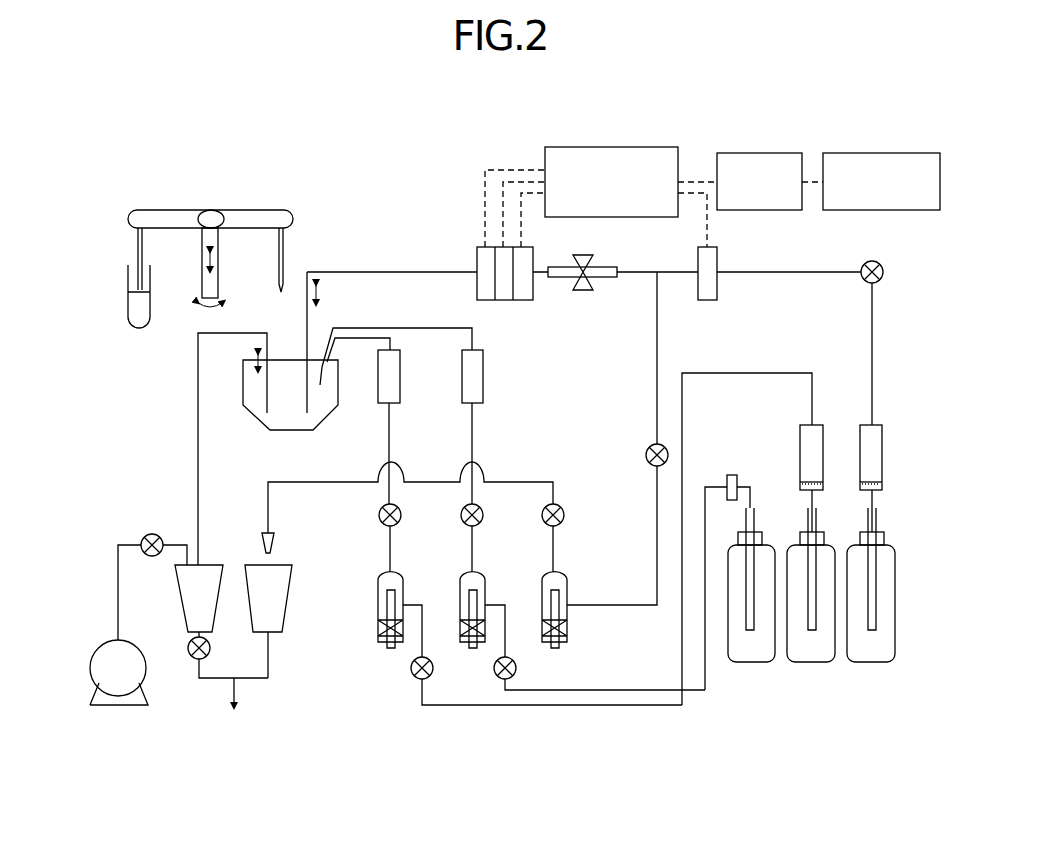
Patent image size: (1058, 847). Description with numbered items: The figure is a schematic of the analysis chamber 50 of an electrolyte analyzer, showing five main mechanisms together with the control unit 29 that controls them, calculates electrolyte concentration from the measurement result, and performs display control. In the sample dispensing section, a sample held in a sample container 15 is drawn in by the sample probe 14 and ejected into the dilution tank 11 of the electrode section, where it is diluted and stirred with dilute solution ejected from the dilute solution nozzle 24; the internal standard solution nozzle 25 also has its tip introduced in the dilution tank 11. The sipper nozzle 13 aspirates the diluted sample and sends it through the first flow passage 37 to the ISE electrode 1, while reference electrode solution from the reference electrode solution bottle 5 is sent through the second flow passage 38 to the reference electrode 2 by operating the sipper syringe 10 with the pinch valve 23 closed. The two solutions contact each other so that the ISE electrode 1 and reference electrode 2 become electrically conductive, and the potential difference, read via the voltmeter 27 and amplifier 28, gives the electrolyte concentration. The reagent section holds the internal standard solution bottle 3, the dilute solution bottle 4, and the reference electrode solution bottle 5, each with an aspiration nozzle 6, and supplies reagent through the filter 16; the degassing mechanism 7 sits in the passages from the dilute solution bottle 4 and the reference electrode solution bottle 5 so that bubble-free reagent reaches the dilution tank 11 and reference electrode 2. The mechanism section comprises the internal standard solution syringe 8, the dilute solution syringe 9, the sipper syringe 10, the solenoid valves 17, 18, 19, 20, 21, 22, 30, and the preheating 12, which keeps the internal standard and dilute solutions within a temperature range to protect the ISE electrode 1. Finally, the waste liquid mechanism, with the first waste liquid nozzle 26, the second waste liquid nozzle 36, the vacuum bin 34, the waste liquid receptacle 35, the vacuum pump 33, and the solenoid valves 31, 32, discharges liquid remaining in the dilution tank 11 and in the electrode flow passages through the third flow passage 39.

The analysis chamber 50 is at (133, 116).
The ISE electrode 1 is at (477, 262).
The reference electrode 2 is at (717, 260).
The internal standard solution bottle 3 is at (775, 545).
The dilute solution bottle 4 is at (834, 545).
The reference electrode solution bottle 5 is at (896, 592).
The aspiration nozzle 6 is at (750, 630).
The degassing mechanism 7 is at (813, 426).
The internal standard solution syringe 8 is at (391, 648).
The dilute solution syringe 9 is at (473, 648).
The sipper syringe 10 is at (555, 648).
The dilution tank 11 is at (256, 420).
The preheating 12 is at (402, 380).
The sipper nozzle 13 is at (308, 317).
The sample probe 14 is at (283, 212).
The sample container 15 is at (128, 312).
The filter 16 is at (732, 475).
The solenoid valve 17 is at (541, 518).
The solenoid valve 18 is at (460, 518).
The solenoid valve 19 is at (378, 518).
The solenoid valve 20 is at (505, 679).
The solenoid valve 21 is at (883, 270).
The solenoid valve 22 is at (646, 455).
The pinch valve 23 is at (583, 290).
The dilute solution nozzle 24 is at (320, 360).
The internal standard solution nozzle 25 is at (320, 385).
The first waste liquid nozzle 26 is at (262, 343).
The voltmeter 27 is at (608, 147).
The amplifier 28 is at (755, 153).
The control unit 29 is at (869, 153).
The solenoid valve 30 is at (422, 679).
The solenoid valve 31 is at (152, 534).
The solenoid valve 32 is at (190, 656).
The vacuum pump 33 is at (94, 675).
The vacuum bin 34 is at (214, 622).
The waste liquid receptacle 35 is at (283, 600).
The second waste liquid nozzle 36 is at (275, 512).
The first flow passage 37 is at (380, 271).
The second flow passage 38 is at (798, 274).
The third flow passage 39 is at (658, 356).